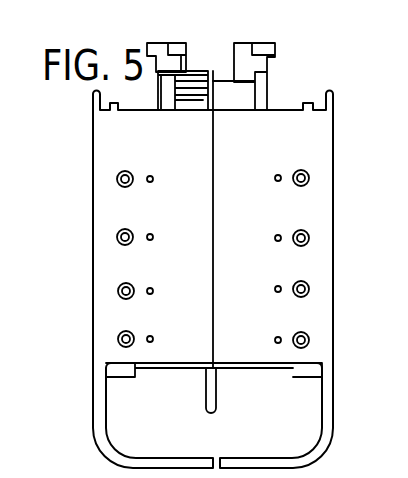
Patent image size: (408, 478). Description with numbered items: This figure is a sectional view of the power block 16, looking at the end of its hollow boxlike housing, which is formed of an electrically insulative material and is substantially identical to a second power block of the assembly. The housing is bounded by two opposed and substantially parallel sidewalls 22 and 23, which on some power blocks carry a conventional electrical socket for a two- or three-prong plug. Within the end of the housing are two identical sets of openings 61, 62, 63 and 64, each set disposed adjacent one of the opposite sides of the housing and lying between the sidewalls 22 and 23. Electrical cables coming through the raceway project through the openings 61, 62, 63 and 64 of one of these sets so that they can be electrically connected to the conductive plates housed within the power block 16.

The power block 16 is at (333, 158).
The sidewall 22 is at (93, 322).
The sidewall 23 is at (335, 309).
The opening 61 is at (128, 171).
The opening 62 is at (130, 229).
The opening 63 is at (132, 283).
The opening 64 is at (132, 332).